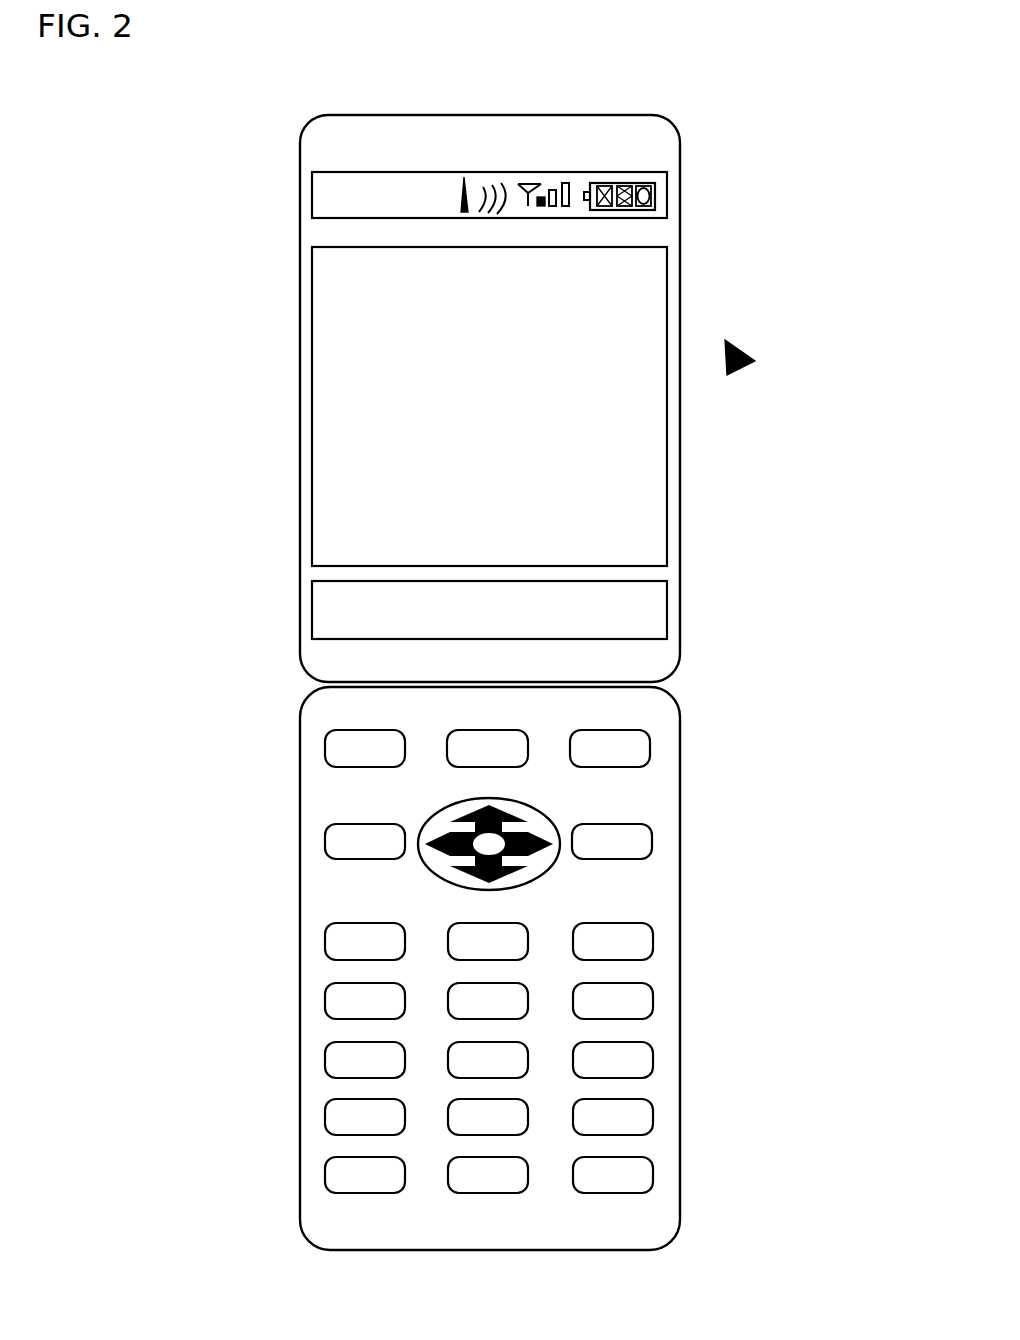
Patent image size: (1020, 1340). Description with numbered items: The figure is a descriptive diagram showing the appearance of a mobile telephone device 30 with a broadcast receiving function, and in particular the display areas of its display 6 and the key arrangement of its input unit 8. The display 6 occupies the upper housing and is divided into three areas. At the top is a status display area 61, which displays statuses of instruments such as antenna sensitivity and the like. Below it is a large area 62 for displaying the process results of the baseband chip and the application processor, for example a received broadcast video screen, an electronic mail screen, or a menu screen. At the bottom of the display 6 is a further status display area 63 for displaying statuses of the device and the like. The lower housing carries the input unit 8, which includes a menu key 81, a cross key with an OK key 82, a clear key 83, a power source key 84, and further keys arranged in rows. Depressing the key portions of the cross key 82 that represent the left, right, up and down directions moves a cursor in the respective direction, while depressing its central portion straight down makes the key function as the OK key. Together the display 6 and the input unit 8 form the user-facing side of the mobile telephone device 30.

The display 6 is at (673, 449).
The status display area 61 is at (320, 202).
The display area for process results 62 is at (322, 395).
The status display area 63 is at (320, 606).
The mobile telephone device 30 is at (743, 350).
The input unit 8 is at (670, 928).
The menu key 81 is at (650, 748).
The cross key (with an OK key) 82 is at (548, 821).
The clear (CLR) key 83 is at (453, 925).
The power source key 84 is at (618, 935).